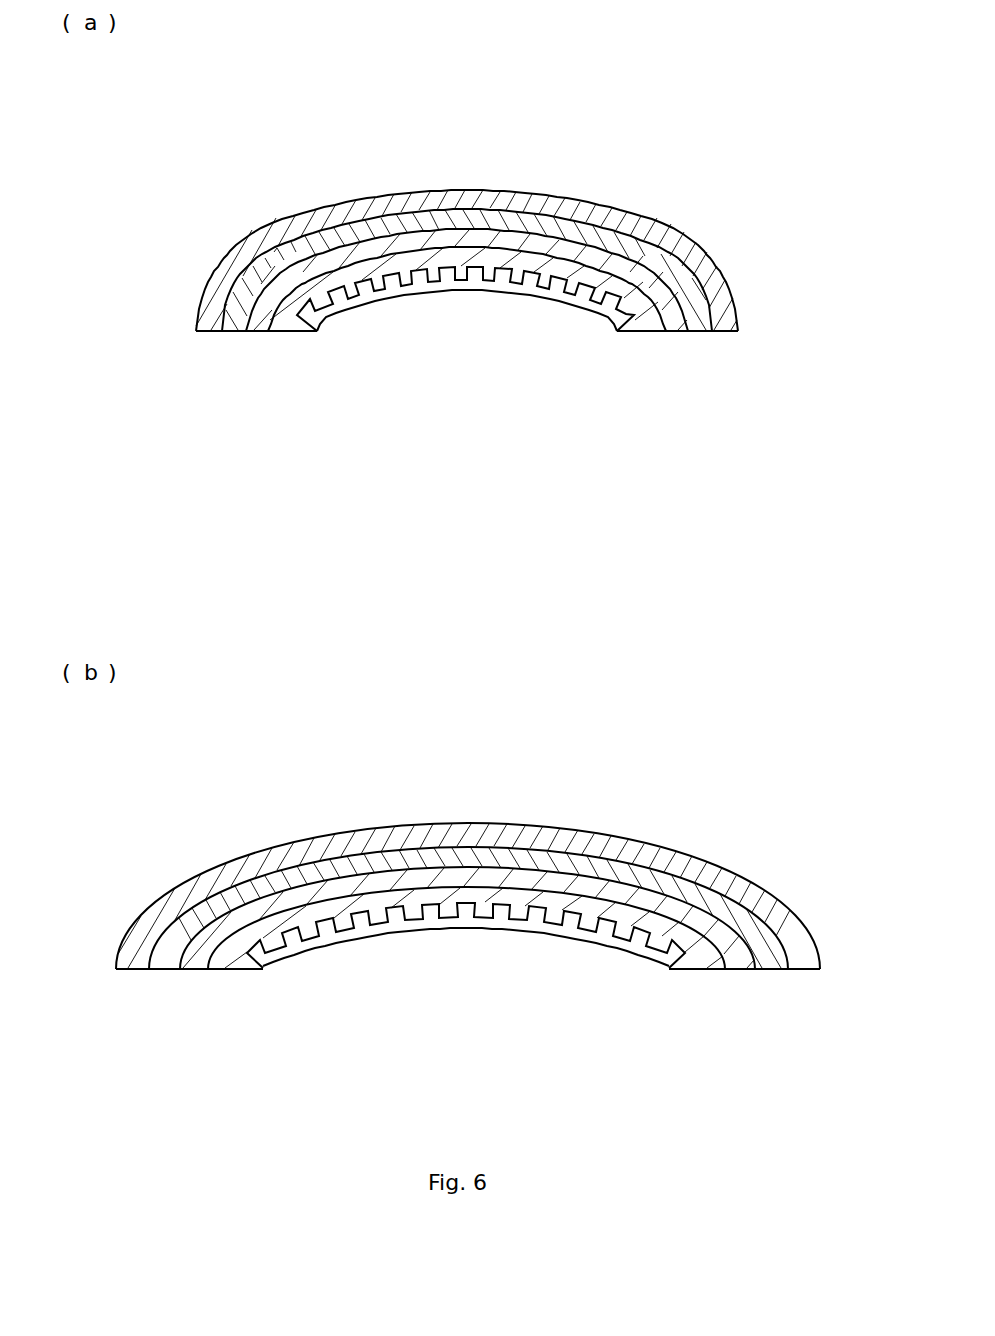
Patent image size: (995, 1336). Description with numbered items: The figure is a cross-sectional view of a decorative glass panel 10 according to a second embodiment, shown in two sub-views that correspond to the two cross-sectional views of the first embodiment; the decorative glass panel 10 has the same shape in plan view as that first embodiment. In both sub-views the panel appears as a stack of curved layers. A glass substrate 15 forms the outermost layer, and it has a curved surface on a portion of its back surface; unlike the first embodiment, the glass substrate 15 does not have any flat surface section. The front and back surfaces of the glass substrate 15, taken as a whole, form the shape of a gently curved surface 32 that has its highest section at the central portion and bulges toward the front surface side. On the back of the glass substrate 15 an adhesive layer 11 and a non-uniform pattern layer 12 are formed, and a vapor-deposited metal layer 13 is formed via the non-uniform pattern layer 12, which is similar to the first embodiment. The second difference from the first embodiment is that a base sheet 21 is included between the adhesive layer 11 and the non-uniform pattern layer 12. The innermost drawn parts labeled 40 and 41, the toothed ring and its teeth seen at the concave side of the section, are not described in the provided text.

The decorative glass panel 10 is at (178, 303).
The adhesive layer 11 is at (690, 333).
The non-uniform pattern layer 12 is at (648, 333).
The vapor-deposited metal layer 13 is at (574, 315).
The glass substrate 15 is at (620, 227).
The base sheet 21 is at (677, 337).
The gently curved surface 32 is at (452, 220).
The toothed ring 40 is at (413, 278).
The teeth 41 is at (362, 298).